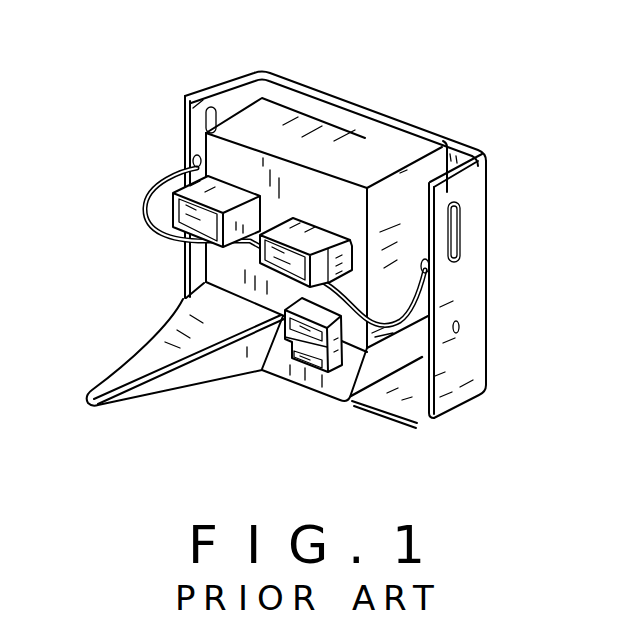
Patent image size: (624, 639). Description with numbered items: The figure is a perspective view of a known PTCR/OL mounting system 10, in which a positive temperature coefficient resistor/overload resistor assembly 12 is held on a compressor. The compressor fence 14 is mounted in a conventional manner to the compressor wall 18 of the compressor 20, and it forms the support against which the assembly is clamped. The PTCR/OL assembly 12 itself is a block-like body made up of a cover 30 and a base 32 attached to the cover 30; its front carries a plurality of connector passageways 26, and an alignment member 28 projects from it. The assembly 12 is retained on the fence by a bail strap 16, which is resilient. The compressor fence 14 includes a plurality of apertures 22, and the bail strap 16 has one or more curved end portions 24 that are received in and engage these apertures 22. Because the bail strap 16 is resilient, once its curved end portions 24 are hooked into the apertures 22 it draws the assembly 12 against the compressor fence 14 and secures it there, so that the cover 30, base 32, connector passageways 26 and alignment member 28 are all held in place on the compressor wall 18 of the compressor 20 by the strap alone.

The PTCR/OL mounting system 10 is at (522, 342).
The PTCR/OL assembly 12 is at (249, 100).
The compressor fence 14 is at (418, 426).
The bail strap 16 is at (147, 205).
The compressor wall 18 is at (448, 137).
The compressor 20 is at (468, 190).
The apertures 22 is at (211, 105).
The curved end portions 24 is at (193, 160).
The connector passageways 26 is at (223, 197).
The alignment member 28 is at (78, 396).
The cover 30 is at (268, 117).
The base 32 is at (390, 126).